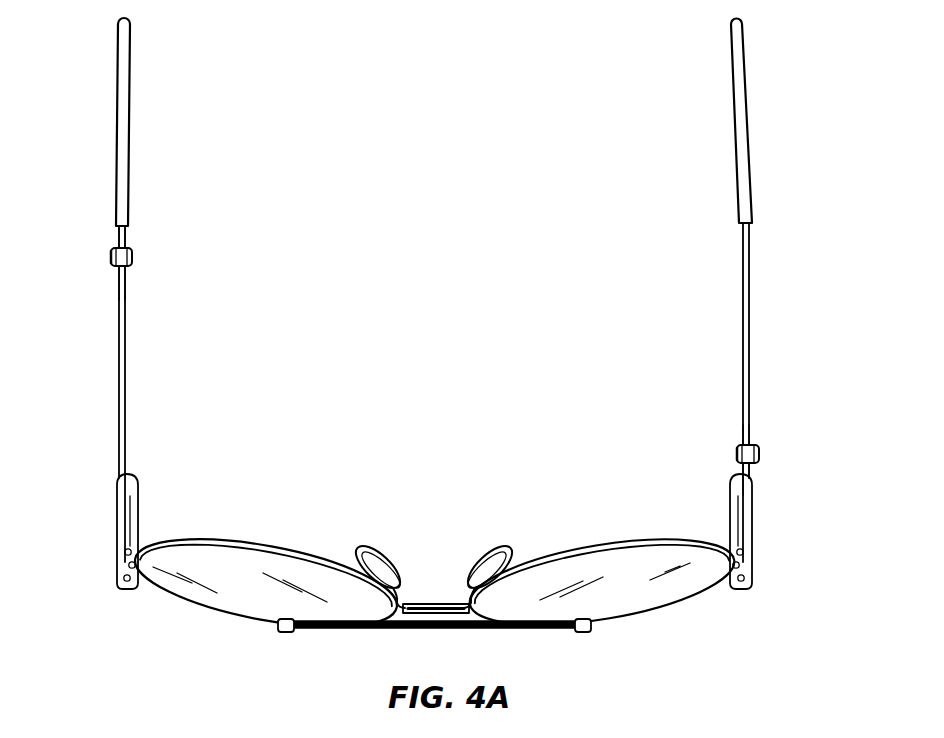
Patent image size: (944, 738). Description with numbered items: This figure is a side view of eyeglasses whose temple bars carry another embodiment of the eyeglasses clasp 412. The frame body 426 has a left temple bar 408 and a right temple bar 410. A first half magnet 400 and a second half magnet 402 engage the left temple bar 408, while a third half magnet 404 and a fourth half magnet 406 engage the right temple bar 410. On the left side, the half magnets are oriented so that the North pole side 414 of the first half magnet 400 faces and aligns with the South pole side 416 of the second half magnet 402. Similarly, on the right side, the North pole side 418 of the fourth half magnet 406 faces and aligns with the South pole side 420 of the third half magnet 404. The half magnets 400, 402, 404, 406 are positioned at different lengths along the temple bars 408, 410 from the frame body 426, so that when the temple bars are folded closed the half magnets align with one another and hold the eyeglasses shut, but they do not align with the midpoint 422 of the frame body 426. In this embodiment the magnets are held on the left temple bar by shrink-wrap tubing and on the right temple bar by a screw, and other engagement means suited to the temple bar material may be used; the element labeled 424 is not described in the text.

The first half magnet 400 is at (133, 254).
The second half magnet 402 is at (110, 256).
The third half magnet 404 is at (760, 452).
The fourth half magnet 406 is at (736, 452).
The left temple bar 408 is at (116, 368).
The right temple bar 410 is at (754, 316).
The eyeglasses clasp 412 is at (429, 492).
The North pole side 414 is at (128, 246).
The South pole side 416 is at (130, 266).
The North pole side 418 is at (757, 463).
The South pole side 420 is at (758, 446).
The midpoint 422 is at (440, 600).
The bridge bar 424 is at (440, 630).
The frame body 426 is at (273, 550).